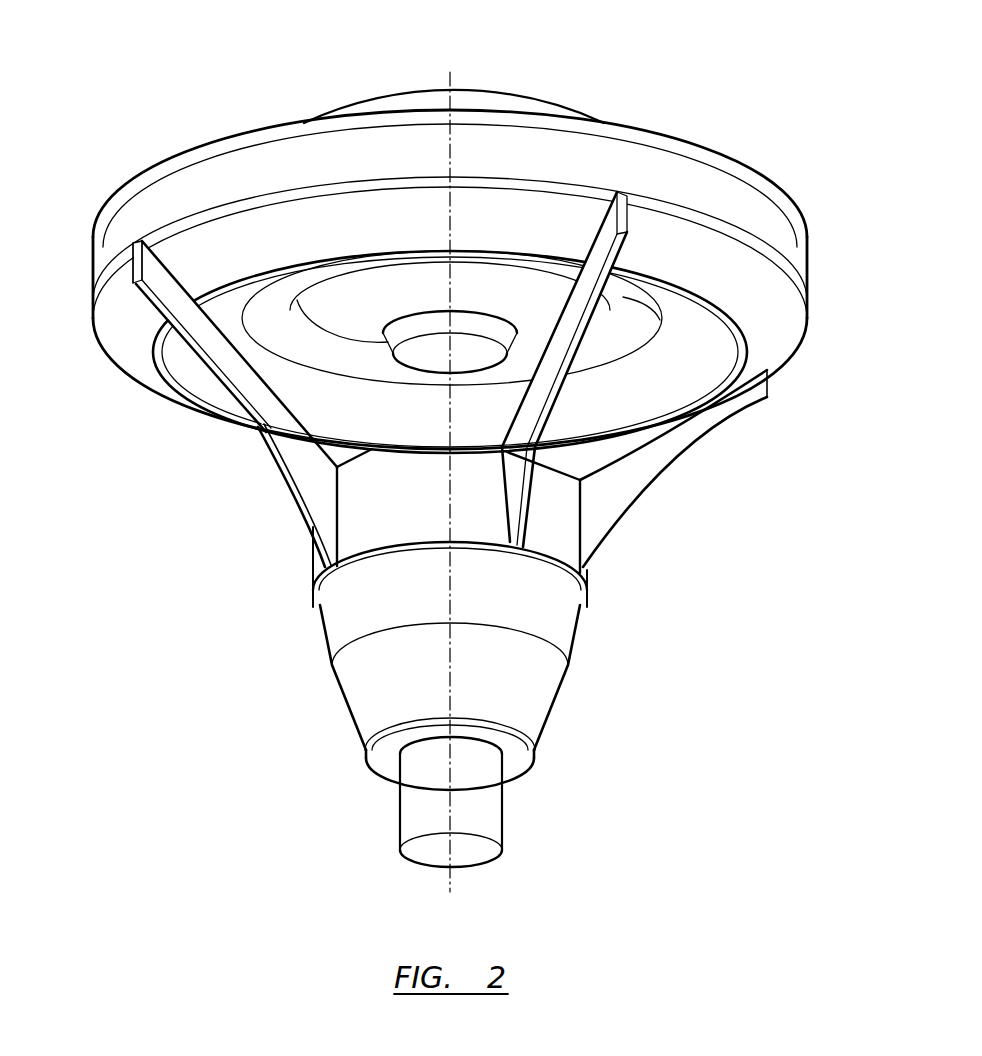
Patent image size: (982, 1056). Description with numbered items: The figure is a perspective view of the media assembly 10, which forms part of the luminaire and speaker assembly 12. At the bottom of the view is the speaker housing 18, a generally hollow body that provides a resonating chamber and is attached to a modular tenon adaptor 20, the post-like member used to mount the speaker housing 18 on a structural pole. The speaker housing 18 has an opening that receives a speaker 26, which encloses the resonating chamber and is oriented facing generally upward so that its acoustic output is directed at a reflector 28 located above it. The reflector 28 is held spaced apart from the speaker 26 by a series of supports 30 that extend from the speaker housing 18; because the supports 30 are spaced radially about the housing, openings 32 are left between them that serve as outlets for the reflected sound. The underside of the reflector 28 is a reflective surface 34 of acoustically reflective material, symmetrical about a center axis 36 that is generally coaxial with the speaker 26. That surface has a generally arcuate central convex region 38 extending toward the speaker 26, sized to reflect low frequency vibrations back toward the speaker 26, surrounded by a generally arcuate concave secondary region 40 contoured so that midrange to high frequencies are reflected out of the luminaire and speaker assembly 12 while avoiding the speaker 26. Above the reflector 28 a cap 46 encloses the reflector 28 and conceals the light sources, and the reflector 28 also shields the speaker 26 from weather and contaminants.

The media assembly 10 is at (712, 76).
The luminaire and speaker assembly 12 is at (771, 185).
The speaker housing 18 is at (553, 677).
The modular tenon adaptor 20 is at (487, 797).
The speaker 26 is at (268, 430).
The reflector 28 is at (124, 324).
The supports 30 is at (605, 497).
The openings 32 is at (633, 473).
The reflective surface 34 is at (141, 352).
The center axis 36 is at (453, 883).
The central convex region 38 is at (545, 360).
The secondary region 40 is at (623, 297).
The cap 46 is at (523, 98).